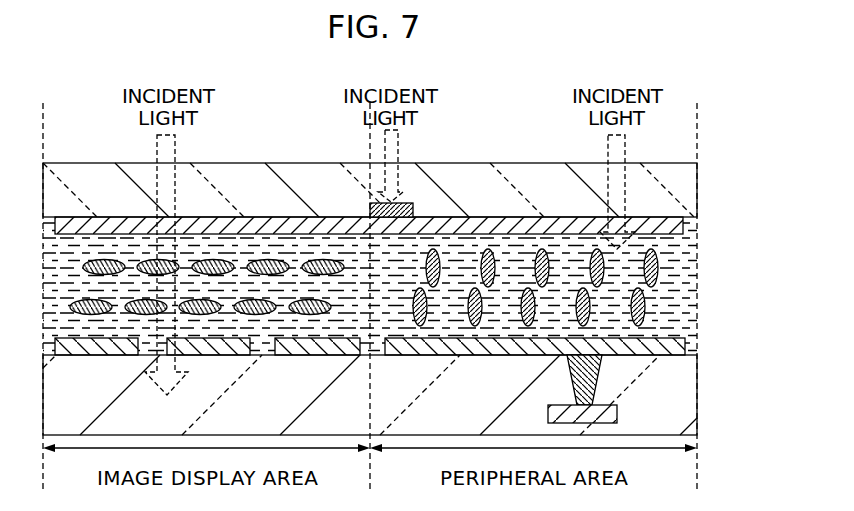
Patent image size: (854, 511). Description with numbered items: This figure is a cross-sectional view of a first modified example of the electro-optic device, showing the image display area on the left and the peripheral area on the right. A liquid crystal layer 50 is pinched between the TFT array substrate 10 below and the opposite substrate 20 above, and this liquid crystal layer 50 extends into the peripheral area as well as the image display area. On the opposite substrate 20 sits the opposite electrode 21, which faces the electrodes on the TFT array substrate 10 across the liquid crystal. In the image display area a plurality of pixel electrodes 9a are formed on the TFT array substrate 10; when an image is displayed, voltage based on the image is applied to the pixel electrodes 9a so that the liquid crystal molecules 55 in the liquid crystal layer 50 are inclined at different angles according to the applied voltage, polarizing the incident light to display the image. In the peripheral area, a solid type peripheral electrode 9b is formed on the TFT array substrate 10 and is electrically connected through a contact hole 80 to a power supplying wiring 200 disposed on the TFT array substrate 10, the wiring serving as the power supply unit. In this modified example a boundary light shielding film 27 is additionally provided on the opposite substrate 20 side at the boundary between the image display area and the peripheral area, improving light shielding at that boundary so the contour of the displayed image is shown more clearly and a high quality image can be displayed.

The opposite substrate 20 is at (693, 187).
The opposite electrode 21 is at (683, 224).
The liquid crystal layer 50 is at (693, 277).
The peripheral electrode 9b is at (685, 346).
The TFT array substrate 10 is at (693, 403).
The liquid crystal molecules 55 is at (270, 264).
The boundary light shielding film 27 is at (408, 203).
The pixel electrode 9a is at (96, 355).
The contact hole 80 is at (593, 377).
The power supplying wiring 200 is at (548, 408).